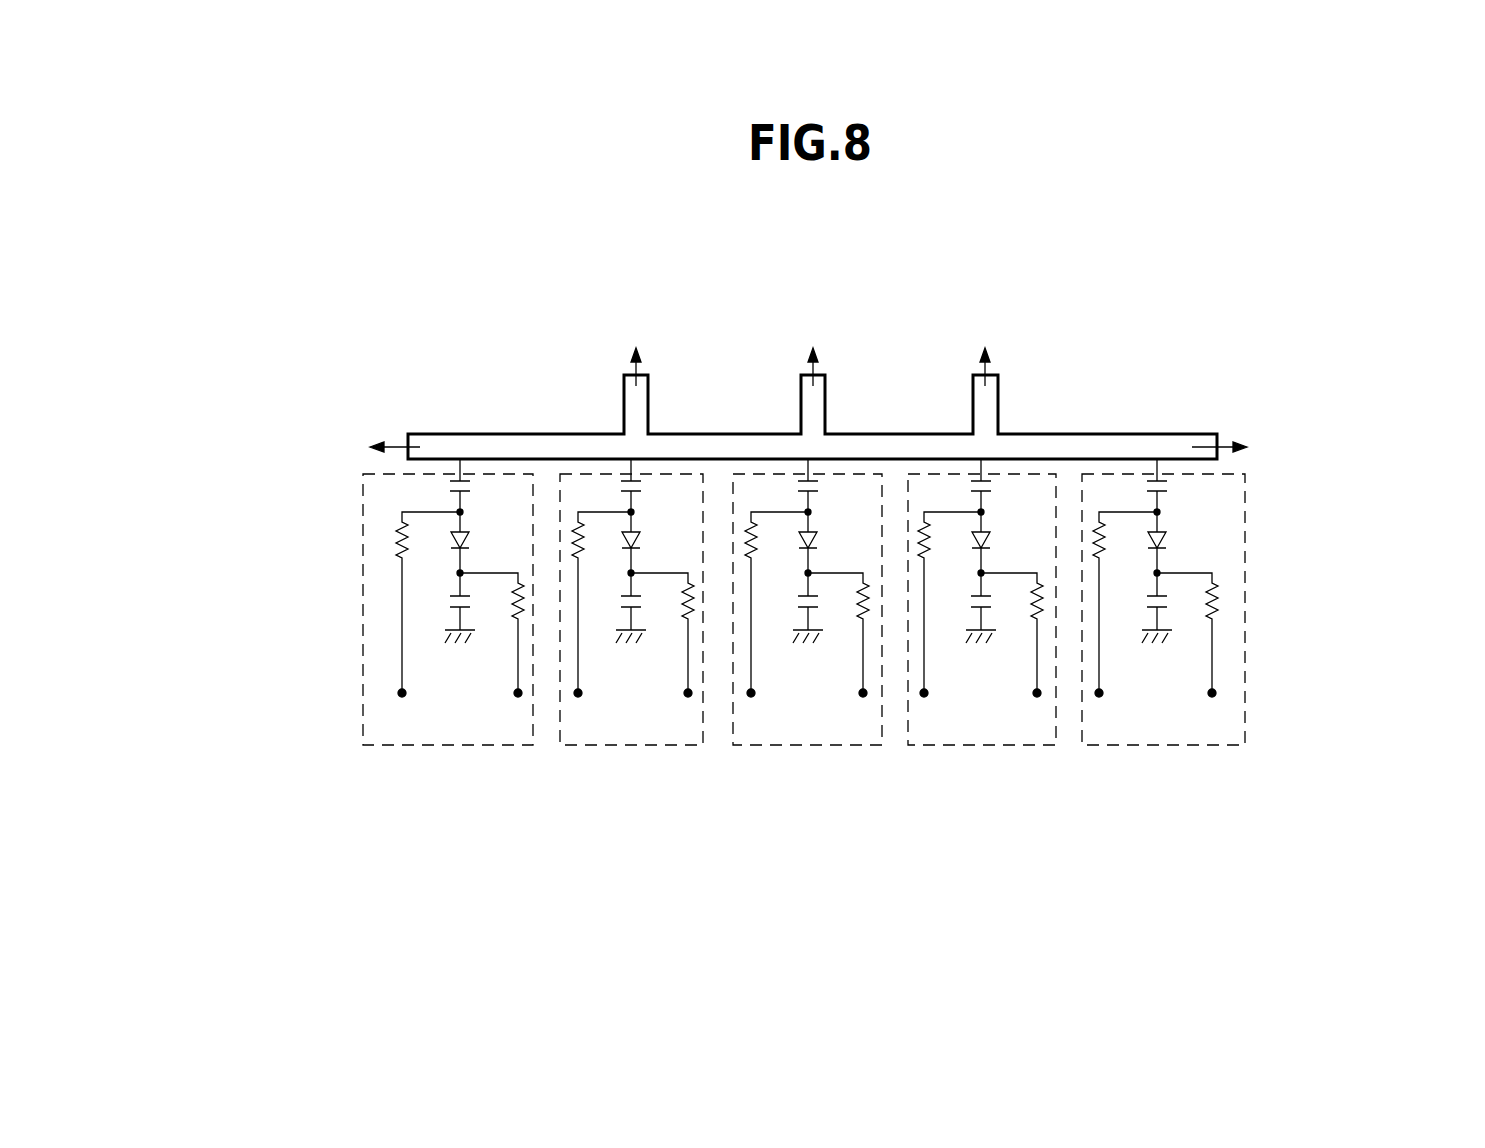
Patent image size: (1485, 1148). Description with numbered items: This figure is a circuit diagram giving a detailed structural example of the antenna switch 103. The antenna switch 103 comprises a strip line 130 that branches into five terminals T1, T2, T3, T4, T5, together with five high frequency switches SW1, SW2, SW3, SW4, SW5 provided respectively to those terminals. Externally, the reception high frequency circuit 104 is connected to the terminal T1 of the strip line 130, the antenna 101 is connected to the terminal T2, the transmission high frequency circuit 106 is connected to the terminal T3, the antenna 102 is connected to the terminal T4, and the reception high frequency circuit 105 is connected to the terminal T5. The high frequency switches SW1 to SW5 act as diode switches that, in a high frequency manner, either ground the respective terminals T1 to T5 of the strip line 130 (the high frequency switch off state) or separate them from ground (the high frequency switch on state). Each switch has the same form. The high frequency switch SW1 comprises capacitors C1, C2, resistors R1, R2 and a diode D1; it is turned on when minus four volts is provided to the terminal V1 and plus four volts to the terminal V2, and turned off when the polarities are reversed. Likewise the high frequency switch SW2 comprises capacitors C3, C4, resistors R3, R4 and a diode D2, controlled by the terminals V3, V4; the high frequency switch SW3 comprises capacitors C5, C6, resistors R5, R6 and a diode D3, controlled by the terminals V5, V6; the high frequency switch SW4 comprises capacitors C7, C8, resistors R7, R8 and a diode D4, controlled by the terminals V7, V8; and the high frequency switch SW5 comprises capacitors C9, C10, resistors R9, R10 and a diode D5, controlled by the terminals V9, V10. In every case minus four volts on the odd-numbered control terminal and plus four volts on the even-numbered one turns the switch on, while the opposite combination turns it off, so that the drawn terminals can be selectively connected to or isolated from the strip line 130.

The antenna switch 103 is at (1036, 254).
The strip line 130 is at (1085, 434).
The antenna 101 is at (623, 318).
The antenna 102 is at (1002, 318).
The reception high frequency circuit 104 is at (287, 441).
The reception high frequency circuit 105 is at (1327, 448).
The transmission high frequency circuit 106 is at (811, 308).
The terminal T1 is at (428, 433).
The terminal T2 is at (648, 386).
The terminal T3 is at (825, 386).
The terminal T4 is at (998, 386).
The terminal T5 is at (1192, 437).
The high frequency switch SW1 is at (468, 745).
The high frequency switch SW2 is at (638, 745).
The high frequency switch SW3 is at (797, 745).
The high frequency switch SW4 is at (965, 745).
The high frequency switch SW5 is at (1148, 745).
The capacitor C1 is at (476, 493).
The capacitor C2 is at (446, 608).
The capacitor C3 is at (647, 493).
The capacitor C4 is at (617, 608).
The capacitor C5 is at (824, 493).
The capacitor C6 is at (794, 608).
The capacitor C7 is at (997, 493).
The capacitor C8 is at (967, 608).
The capacitor C9 is at (1173, 493).
The capacitor C10 is at (1137, 608).
The diode D1 is at (476, 542).
The diode D2 is at (647, 542).
The diode D3 is at (824, 542).
The diode D4 is at (997, 542).
The diode D5 is at (1173, 542).
The resistor R1 is at (414, 602).
The resistor R2 is at (505, 633).
The resistor R3 is at (588, 602).
The resistor R4 is at (676, 633).
The resistor R5 is at (763, 602).
The resistor R6 is at (852, 633).
The resistor R7 is at (936, 602).
The resistor R8 is at (1025, 633).
The resistor R9 is at (1111, 602).
The resistor R10 is at (1206, 633).
The terminal V1 is at (402, 708).
The terminal V2 is at (518, 708).
The terminal V3 is at (578, 708).
The terminal V4 is at (688, 708).
The terminal V5 is at (751, 708).
The terminal V6 is at (863, 708).
The terminal V7 is at (924, 708).
The terminal V8 is at (1037, 708).
The terminal V9 is at (1099, 708).
The terminal V10 is at (1212, 708).